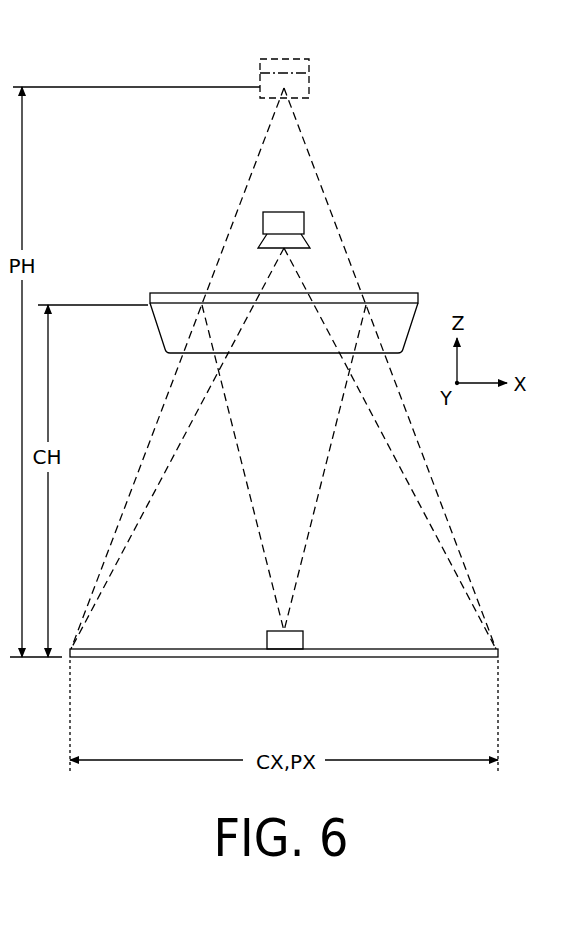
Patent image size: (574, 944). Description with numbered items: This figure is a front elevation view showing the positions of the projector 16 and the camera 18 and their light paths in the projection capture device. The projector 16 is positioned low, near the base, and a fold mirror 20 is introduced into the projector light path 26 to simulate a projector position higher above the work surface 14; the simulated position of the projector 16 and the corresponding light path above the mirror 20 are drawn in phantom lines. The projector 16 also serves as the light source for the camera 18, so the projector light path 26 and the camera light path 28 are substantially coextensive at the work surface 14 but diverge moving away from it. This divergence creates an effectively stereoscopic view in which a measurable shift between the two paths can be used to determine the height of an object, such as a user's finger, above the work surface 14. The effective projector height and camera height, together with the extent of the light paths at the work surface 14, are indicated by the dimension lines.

The work surface 14 is at (484, 649).
The projector 16 is at (267, 636).
The camera 18 is at (283, 217).
The fold mirror 20 is at (158, 316).
The projector light path 26 is at (153, 432).
The camera light path 28 is at (137, 523).